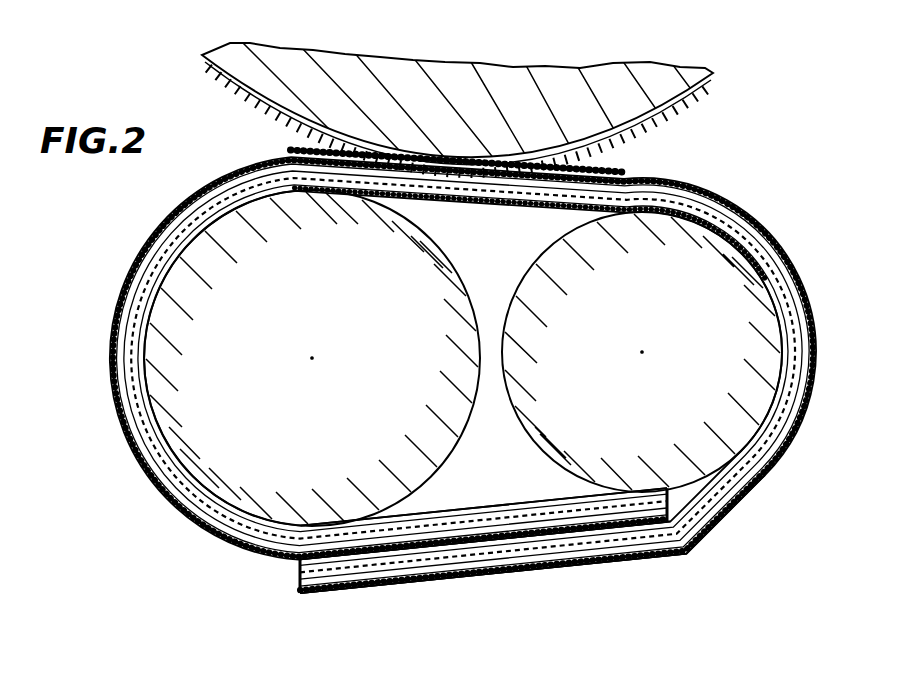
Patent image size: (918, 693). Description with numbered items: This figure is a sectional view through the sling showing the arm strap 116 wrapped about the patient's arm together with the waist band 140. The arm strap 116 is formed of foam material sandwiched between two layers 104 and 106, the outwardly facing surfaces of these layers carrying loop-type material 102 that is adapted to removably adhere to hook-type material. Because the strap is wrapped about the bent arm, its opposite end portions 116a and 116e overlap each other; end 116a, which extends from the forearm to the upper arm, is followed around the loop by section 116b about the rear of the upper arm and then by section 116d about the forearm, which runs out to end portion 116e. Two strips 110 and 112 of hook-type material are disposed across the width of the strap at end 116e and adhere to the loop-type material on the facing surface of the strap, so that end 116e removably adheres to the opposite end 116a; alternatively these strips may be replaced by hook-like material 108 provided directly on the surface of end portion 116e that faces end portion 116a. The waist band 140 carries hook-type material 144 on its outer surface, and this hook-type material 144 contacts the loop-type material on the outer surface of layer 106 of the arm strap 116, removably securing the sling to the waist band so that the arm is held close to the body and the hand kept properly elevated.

The loop-type material 102 is at (444, 373).
The layer 104 is at (504, 200).
The layer 106 is at (272, 158).
The hook-like material 108 is at (300, 563).
The strip of hook-type material 110 is at (480, 580).
The strip of hook-type material 112 is at (316, 596).
The arm strap 116 is at (143, 228).
The end portion 116a is at (480, 512).
The section 116b is at (112, 318).
The section 116d is at (812, 385).
The end portion 116e is at (603, 563).
The waist band 140 is at (424, 150).
The hook-type material 144 is at (655, 128).